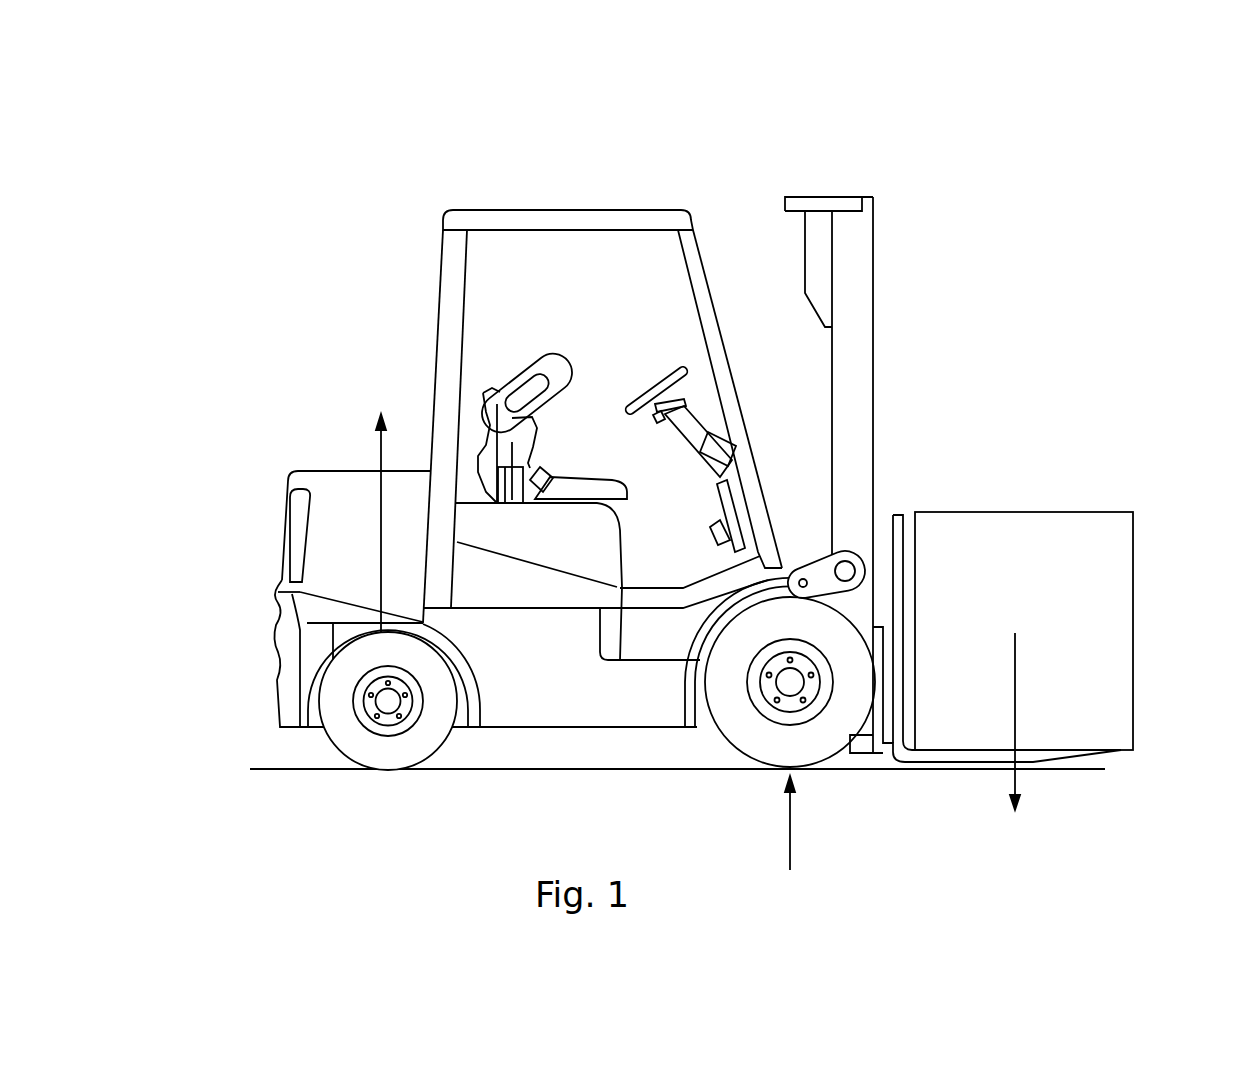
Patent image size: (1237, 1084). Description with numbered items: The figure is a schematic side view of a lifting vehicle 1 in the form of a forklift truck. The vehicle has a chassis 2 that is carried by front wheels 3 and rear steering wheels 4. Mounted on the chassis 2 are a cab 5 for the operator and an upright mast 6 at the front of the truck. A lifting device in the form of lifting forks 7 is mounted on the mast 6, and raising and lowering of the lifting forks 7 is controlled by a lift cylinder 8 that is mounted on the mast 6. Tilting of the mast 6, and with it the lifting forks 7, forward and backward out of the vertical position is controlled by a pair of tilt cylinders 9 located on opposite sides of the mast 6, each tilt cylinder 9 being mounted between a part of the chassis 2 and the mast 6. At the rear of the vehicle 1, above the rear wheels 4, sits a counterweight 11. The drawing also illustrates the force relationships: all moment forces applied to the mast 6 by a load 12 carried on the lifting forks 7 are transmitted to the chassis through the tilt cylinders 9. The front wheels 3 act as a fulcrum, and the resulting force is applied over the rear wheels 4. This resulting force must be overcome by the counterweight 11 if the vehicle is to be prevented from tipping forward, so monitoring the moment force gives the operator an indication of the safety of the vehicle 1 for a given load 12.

The lifting vehicle 1 is at (554, 181).
The chassis 2 is at (558, 688).
The front wheels 3 is at (833, 720).
The rear steering wheels 4 is at (350, 727).
The cab 5 is at (455, 300).
The mast 6 is at (860, 385).
The lifting forks 7 is at (953, 757).
The lift cylinder 8 is at (823, 258).
The tilt cylinders 9 is at (803, 587).
The counterweight 11 is at (293, 532).
The load 12 is at (1115, 598).